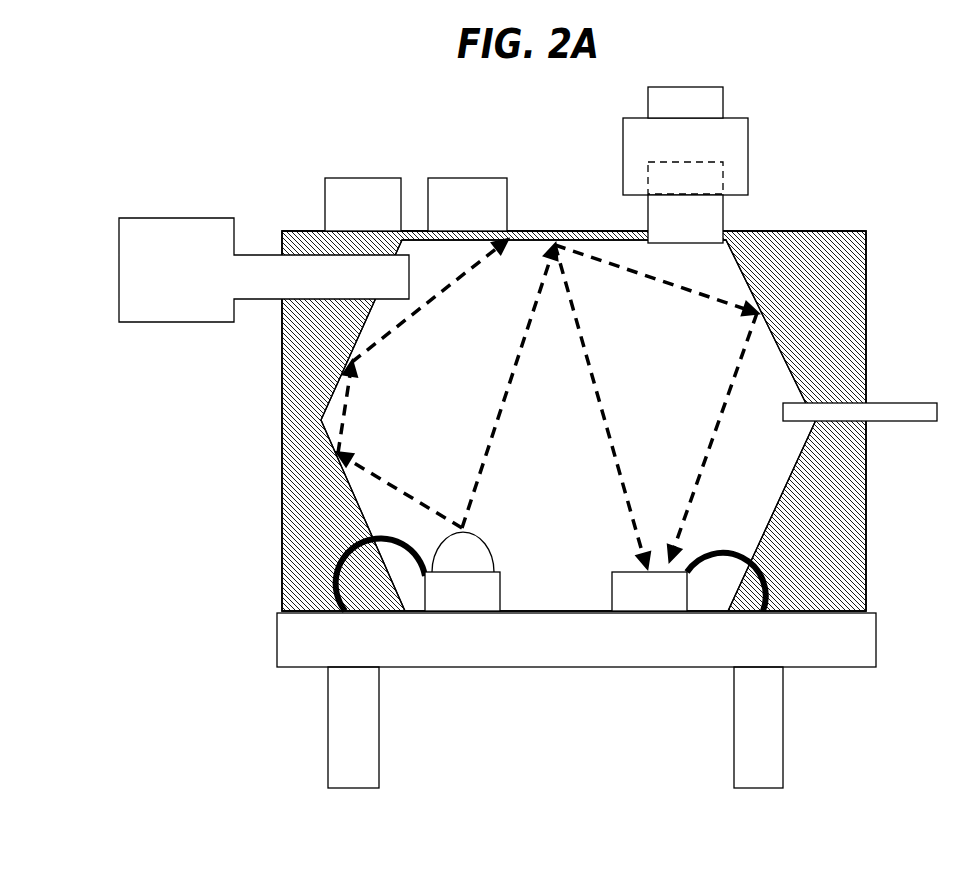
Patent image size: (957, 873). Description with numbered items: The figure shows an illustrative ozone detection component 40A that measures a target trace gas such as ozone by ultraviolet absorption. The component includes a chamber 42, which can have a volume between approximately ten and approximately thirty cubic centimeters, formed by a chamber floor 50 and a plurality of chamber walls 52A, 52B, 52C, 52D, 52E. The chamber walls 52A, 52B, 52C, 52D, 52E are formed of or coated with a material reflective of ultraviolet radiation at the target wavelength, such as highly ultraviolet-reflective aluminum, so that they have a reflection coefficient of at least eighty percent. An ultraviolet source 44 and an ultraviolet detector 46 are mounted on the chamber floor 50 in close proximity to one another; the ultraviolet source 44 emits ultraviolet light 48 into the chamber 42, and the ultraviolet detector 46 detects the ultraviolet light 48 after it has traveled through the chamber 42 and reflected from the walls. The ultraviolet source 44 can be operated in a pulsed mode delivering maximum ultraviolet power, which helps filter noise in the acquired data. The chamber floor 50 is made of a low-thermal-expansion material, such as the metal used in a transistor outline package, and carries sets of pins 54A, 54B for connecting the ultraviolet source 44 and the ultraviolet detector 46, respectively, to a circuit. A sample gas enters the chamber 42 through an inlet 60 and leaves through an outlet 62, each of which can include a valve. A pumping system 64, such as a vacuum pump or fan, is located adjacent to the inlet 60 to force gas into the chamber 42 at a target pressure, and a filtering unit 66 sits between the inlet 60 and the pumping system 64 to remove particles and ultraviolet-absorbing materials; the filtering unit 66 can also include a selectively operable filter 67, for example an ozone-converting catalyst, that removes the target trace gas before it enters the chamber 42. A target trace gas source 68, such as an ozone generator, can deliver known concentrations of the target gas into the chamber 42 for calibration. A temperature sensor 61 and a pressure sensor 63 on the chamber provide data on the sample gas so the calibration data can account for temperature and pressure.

The ozone detection component 40A is at (196, 140).
The chamber 42 is at (544, 440).
The ultraviolet source 44 is at (448, 604).
The ultraviolet detector 46 is at (635, 604).
The ultraviolet light 48 is at (471, 498).
The chamber floor 50 is at (546, 652).
The chamber wall 52A is at (358, 508).
The chamber wall 52B is at (360, 340).
The chamber wall 52C is at (581, 240).
The chamber wall 52D is at (772, 342).
The chamber wall 52E is at (770, 515).
The set of pins 54A is at (333, 734).
The set of pins 54B is at (737, 734).
The inlet 60 is at (671, 231).
The temperature sensor 61 is at (349, 216).
The outlet 62 is at (904, 408).
The pressure sensor 63 is at (453, 216).
The pumping system 64 is at (671, 115).
The filtering unit 66 is at (671, 153).
The filter 67 is at (671, 191).
The target trace gas source 68 is at (158, 280).